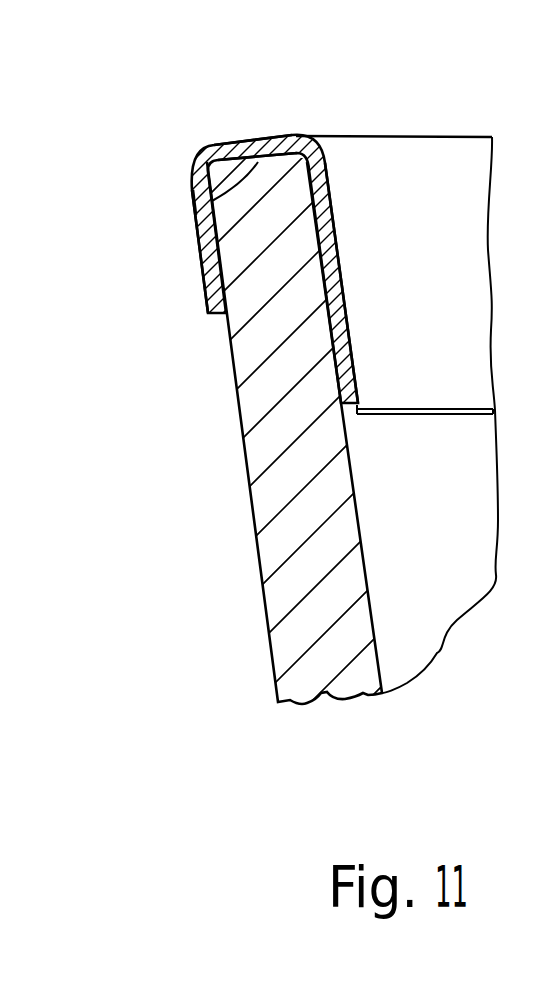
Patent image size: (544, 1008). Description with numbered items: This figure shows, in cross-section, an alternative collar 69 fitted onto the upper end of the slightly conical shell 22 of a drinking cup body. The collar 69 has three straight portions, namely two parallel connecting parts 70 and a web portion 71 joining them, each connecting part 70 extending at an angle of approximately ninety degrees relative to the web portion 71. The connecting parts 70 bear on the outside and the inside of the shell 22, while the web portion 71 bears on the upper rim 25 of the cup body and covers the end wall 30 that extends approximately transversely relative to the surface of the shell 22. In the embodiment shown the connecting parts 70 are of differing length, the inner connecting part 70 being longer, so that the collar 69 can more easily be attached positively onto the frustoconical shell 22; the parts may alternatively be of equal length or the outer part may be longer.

The shell 22 is at (282, 603).
The upper rim 25 is at (228, 217).
The end wall 30 is at (197, 211).
The collar 69 is at (266, 118).
The connecting parts 70 is at (337, 248).
The web portion 71 is at (238, 146).